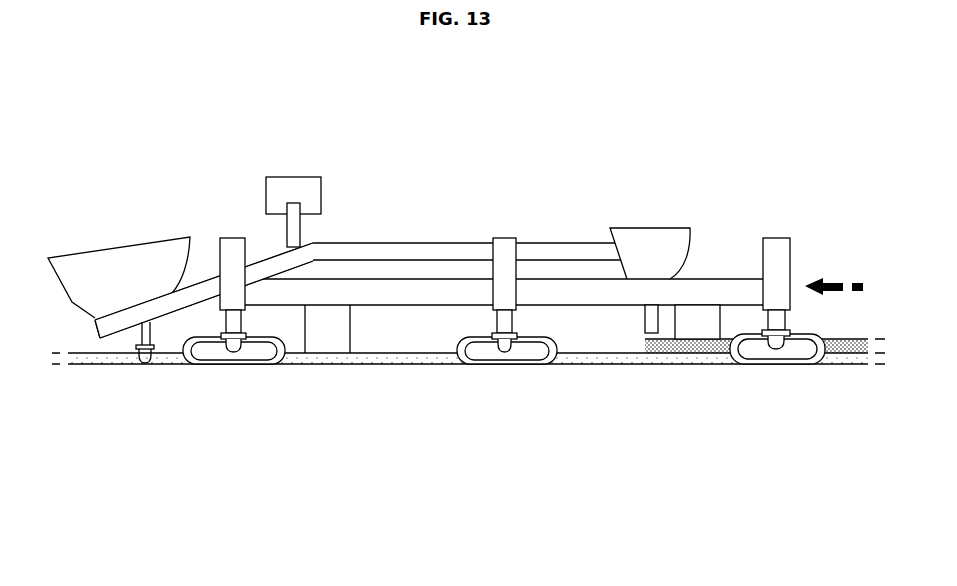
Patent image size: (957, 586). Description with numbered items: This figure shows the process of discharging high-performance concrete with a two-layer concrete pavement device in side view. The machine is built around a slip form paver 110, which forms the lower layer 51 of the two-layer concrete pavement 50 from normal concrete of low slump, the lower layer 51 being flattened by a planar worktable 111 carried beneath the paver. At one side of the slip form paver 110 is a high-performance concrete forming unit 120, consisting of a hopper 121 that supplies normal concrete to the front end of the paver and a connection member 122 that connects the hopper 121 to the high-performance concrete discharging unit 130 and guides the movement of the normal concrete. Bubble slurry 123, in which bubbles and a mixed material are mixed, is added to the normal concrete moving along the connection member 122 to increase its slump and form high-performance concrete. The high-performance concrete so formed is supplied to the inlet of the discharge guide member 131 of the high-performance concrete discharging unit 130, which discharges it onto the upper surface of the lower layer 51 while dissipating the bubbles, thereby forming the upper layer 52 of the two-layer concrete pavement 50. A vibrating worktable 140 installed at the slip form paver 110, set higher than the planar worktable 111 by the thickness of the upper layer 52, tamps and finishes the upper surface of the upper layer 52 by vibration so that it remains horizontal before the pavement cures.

The two-layer concrete pavement 50 is at (701, 372).
The lower layer 51 is at (587, 357).
The upper layer 52 is at (661, 347).
The slip form paver 110 is at (415, 298).
The planar worktable 111 is at (328, 337).
The high-performance concrete forming unit 120 is at (474, 236).
The hopper 121 is at (128, 262).
The connection member 122 is at (566, 250).
The bubble slurry 123 is at (295, 187).
The high-performance concrete discharging unit 130 is at (670, 222).
The discharge guide member 131 is at (648, 318).
The vibrating worktable 140 is at (697, 325).